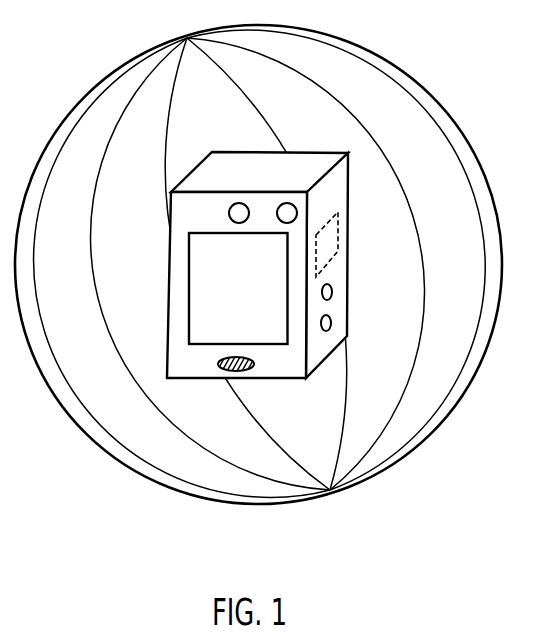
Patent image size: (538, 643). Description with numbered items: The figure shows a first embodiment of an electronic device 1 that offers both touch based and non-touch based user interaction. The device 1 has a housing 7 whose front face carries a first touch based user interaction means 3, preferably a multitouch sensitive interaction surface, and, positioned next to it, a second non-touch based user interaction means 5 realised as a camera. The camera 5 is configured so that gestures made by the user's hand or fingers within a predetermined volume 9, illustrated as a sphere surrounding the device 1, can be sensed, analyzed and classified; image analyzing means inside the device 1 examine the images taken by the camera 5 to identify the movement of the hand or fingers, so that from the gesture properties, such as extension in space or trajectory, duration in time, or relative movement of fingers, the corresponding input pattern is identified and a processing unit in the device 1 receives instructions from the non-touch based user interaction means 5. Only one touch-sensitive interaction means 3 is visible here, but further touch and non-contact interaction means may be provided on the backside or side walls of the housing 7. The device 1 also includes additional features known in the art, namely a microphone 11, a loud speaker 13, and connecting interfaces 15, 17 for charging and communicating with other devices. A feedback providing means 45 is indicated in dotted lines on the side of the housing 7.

The electronic device 1 is at (171, 168).
The touch based user interaction means 3 is at (188, 346).
The non-touch based user interaction means 5 is at (288, 203).
The housing 7 is at (327, 160).
The predetermined volume 9 is at (347, 488).
The microphone 11 is at (247, 371).
The loud speaker 13 is at (240, 203).
The connecting interface 15 is at (332, 292).
The connecting interface 17 is at (331, 324).
The feedback providing means 45 is at (337, 230).